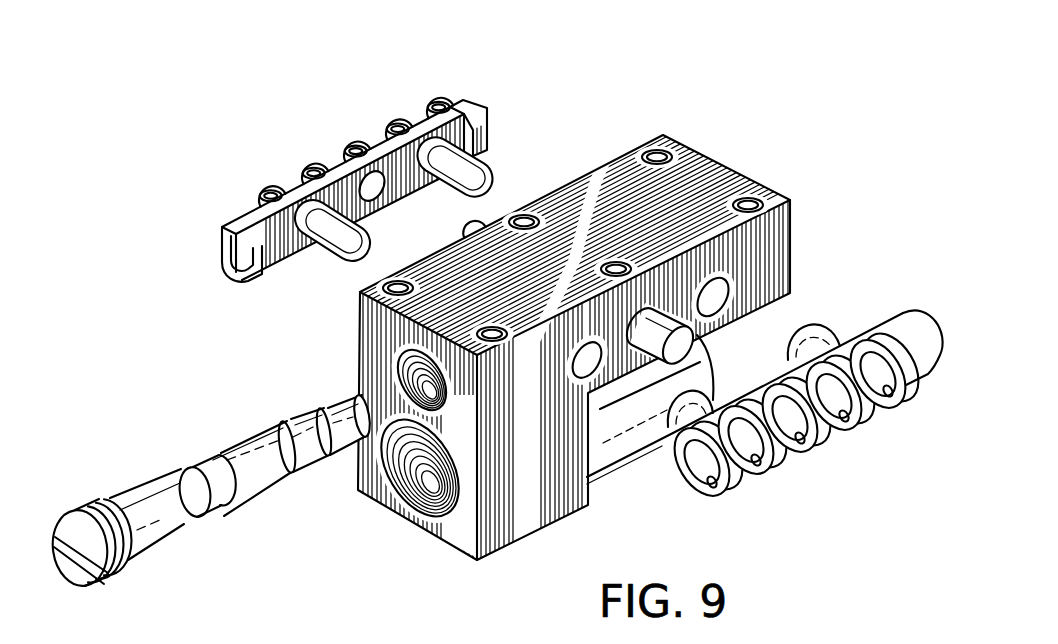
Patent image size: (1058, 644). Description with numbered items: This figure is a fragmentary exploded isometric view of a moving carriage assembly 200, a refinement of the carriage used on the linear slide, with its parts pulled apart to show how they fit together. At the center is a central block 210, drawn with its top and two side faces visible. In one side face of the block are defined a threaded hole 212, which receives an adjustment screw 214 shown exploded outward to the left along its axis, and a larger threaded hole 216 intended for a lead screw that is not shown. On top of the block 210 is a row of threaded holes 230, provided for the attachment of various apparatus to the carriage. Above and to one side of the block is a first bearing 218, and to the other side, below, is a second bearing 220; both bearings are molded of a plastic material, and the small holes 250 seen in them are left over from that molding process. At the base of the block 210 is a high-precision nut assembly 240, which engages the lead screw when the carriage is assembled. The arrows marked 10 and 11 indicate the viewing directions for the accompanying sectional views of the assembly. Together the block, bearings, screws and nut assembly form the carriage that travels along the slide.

The moving carriage assembly 200 is at (57, 90).
The central block 210 is at (767, 259).
The threaded hole 212 is at (394, 370).
The adjustment screw 214 is at (94, 518).
The threaded hole 216 is at (420, 476).
The bearing 218 is at (349, 158).
The bearing 220 is at (802, 409).
The threaded holes 230 is at (747, 197).
The high-precision nut assembly 240 is at (713, 382).
The holes 250 is at (892, 390).
The section line 10- 10 is at (152, 248).
The section line 11- 11 is at (428, 305).